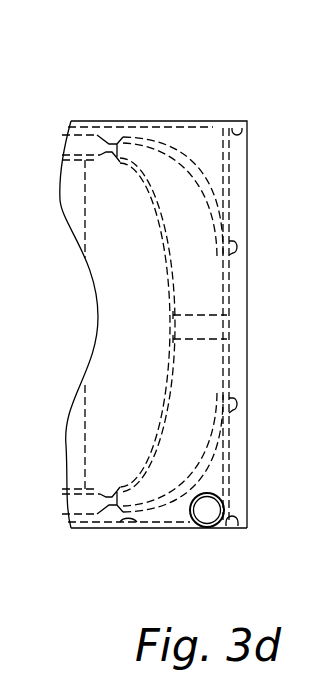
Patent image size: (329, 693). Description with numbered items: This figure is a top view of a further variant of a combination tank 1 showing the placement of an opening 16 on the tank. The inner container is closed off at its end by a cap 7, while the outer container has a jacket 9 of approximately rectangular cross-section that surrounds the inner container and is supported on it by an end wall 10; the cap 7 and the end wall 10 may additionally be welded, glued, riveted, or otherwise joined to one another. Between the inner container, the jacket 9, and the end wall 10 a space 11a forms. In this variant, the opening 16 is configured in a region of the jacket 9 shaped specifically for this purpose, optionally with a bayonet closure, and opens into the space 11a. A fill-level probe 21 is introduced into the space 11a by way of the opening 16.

The housing 1 is at (93, 114).
The cap 7 is at (227, 310).
The jacket 9 is at (111, 125).
The end wall 10 is at (224, 186).
The space 11a is at (212, 128).
The opening 16 is at (188, 531).
The fill-level probe 21 is at (209, 511).